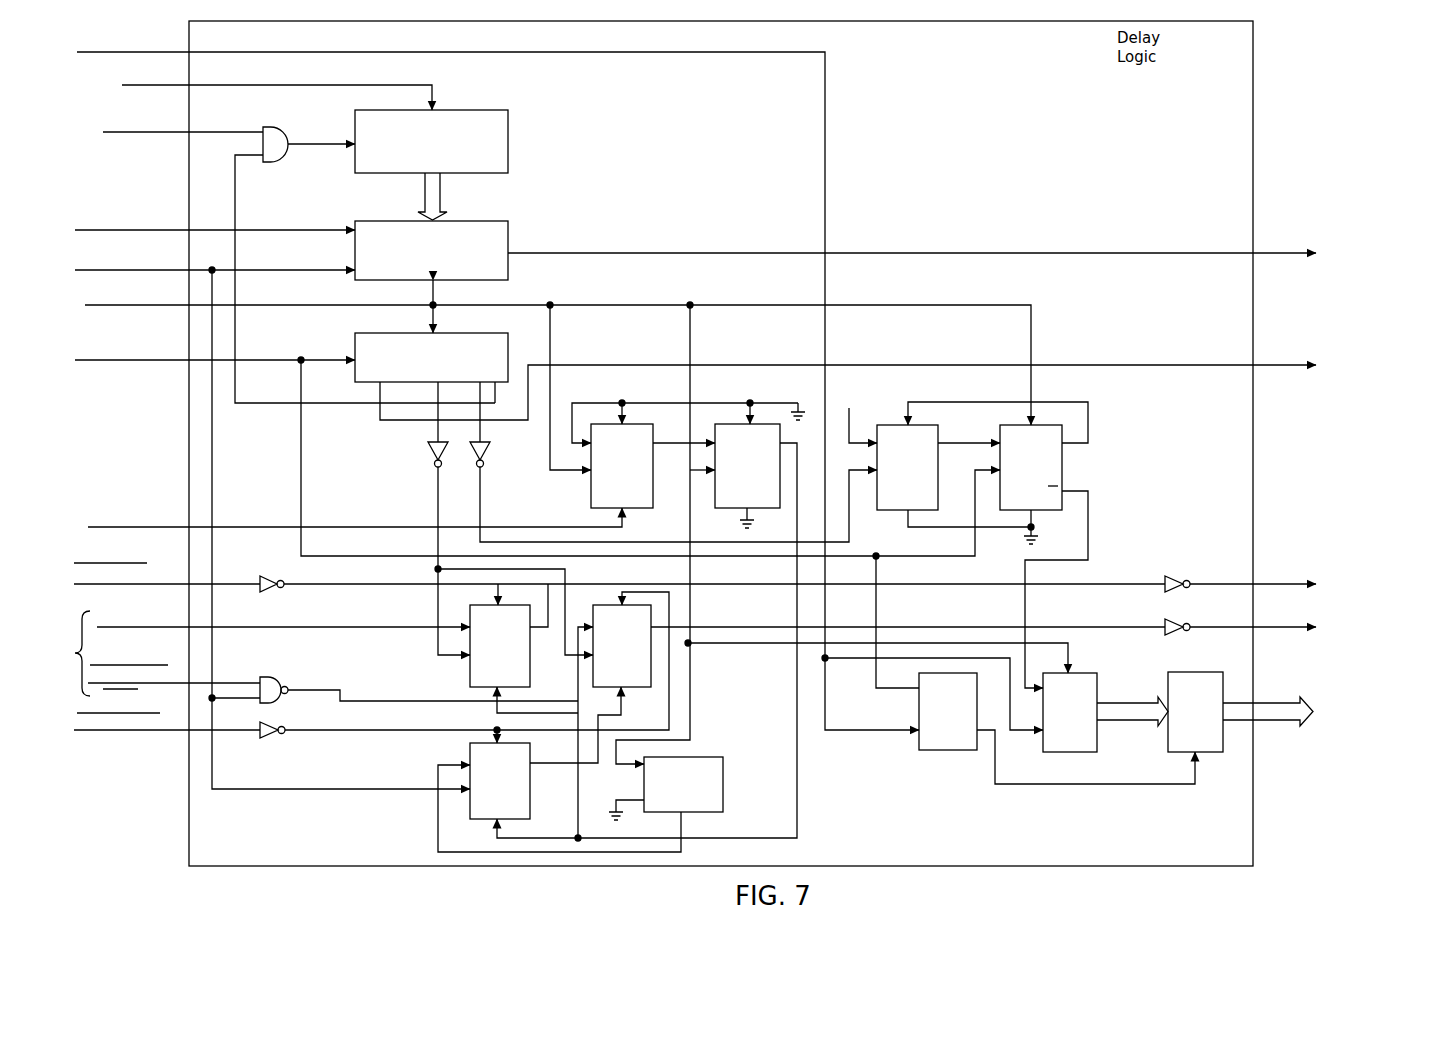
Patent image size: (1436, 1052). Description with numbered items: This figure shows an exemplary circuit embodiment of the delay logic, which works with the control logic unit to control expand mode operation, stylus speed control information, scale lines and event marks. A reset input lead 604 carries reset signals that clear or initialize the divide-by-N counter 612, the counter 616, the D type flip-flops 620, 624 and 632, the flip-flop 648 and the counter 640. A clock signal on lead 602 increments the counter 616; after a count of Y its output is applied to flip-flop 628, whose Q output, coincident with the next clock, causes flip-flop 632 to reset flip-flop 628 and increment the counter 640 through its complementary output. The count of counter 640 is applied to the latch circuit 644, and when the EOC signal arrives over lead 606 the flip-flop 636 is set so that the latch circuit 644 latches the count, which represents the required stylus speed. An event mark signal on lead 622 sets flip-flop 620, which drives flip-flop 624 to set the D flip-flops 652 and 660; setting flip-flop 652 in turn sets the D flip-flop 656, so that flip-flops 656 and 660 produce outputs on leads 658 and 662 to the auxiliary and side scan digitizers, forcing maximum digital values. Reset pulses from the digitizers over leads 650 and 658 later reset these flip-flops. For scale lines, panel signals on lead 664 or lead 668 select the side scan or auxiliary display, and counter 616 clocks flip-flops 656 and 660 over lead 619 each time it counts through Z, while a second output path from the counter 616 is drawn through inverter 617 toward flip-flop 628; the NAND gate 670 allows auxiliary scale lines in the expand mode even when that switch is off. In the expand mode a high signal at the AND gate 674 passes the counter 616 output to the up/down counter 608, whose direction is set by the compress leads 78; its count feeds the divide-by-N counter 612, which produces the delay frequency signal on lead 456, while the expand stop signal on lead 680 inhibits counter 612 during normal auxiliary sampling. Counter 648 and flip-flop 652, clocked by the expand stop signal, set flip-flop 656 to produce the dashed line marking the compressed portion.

The EOC lead 606 is at (245, 52).
The compress leads 78 is at (305, 85).
The AND gate 674 is at (268, 127).
The up/down counter 608 is at (508, 123).
The divide-by-N counter 612 is at (508, 237).
The delay frequency lead 456 is at (973, 253).
The expand stop lead 680 is at (255, 270).
The reset input lead 604 is at (103, 305).
The clock lead 602 is at (103, 360).
The counter 616 is at (366, 383).
The clock lead to scale line flip-flops 619 is at (436, 470).
The inverter 617 is at (481, 470).
The D type flip-flop 620 is at (638, 424).
The D type flip-flop 624 is at (728, 424).
The flip-flop 628 is at (891, 425).
The D type flip-flop 632 is at (1062, 463).
The event mark lead 622 is at (110, 527).
The auxiliary digitizer lead 658 is at (220, 584).
The side scan digitizer lead 662 is at (1100, 584).
The side scan scale line lead 664 is at (233, 627).
The auxiliary scale line lead 668 is at (262, 677).
The NAND gate 670 is at (288, 694).
The reset lead 650 is at (233, 730).
The D flip-flop 660 is at (470, 676).
The D flip-flop 656 is at (651, 668).
The D flip-flop 652 is at (470, 808).
The flip-flop (counter) 648 is at (723, 782).
The flip-flop 636 is at (940, 750).
The counter 640 is at (1068, 752).
The latch circuit 644 is at (1212, 752).